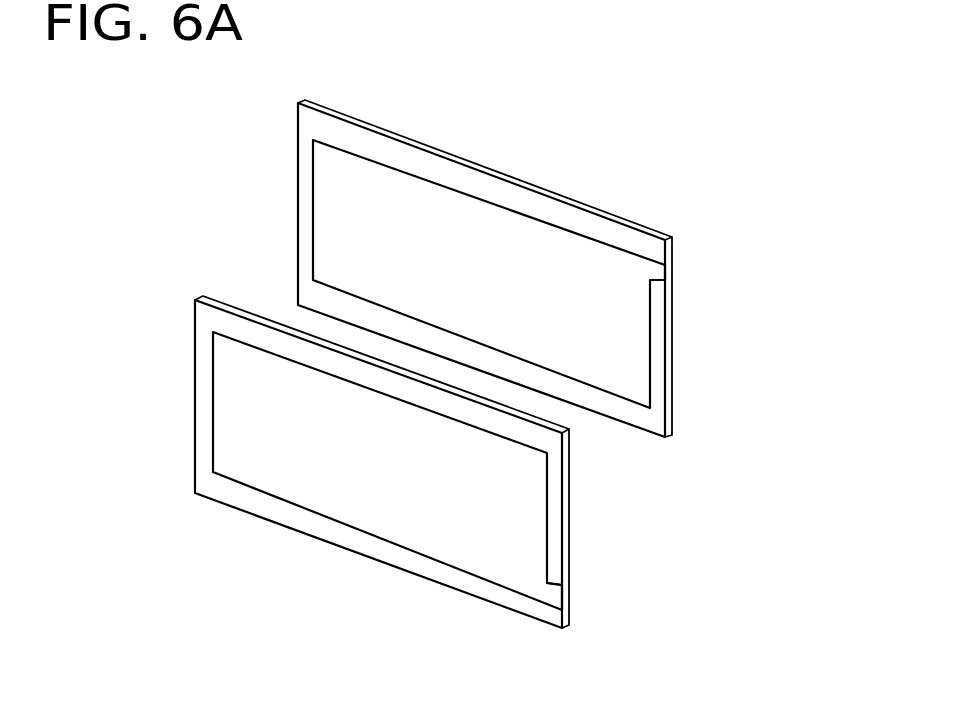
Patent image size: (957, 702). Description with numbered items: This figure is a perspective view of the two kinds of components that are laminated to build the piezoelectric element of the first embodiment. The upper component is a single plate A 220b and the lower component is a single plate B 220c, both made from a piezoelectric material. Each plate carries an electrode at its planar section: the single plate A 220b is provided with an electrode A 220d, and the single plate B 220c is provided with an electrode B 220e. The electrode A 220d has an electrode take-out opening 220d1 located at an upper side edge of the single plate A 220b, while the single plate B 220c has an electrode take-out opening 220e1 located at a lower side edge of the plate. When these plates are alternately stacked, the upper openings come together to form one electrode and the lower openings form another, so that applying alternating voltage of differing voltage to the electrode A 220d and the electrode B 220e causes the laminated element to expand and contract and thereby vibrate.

The single plate A 220b is at (672, 365).
The single plate B 220c is at (567, 525).
The electrode A 220d is at (542, 240).
The electrode B 220e is at (223, 355).
The electrode take-out opening 220d1 is at (660, 275).
The electrode take-out opening 220e1 is at (556, 596).